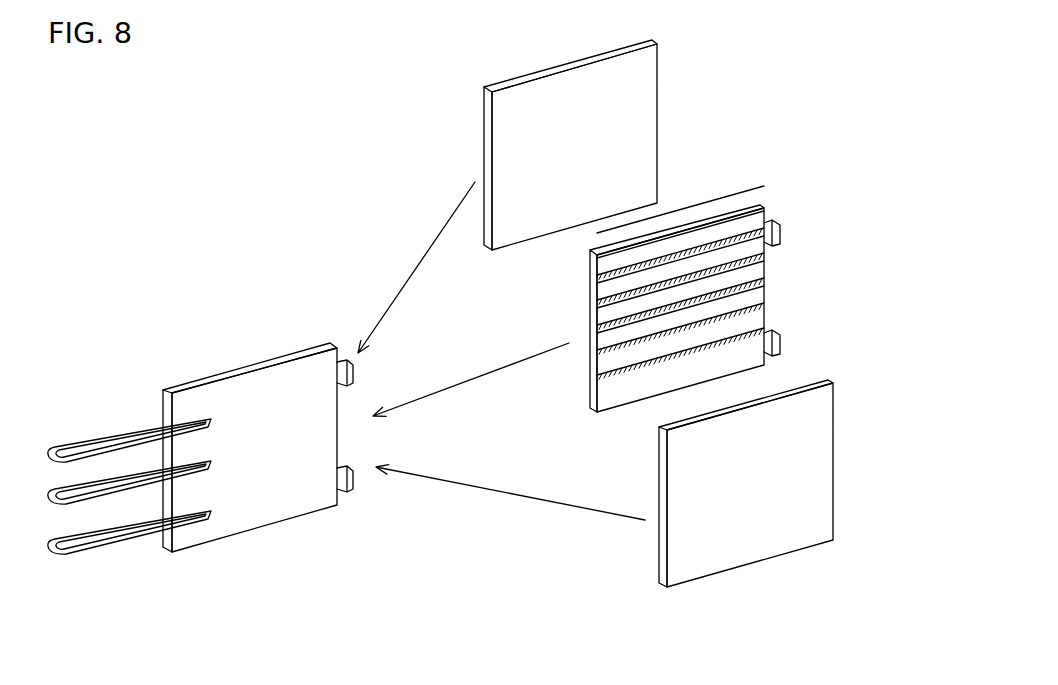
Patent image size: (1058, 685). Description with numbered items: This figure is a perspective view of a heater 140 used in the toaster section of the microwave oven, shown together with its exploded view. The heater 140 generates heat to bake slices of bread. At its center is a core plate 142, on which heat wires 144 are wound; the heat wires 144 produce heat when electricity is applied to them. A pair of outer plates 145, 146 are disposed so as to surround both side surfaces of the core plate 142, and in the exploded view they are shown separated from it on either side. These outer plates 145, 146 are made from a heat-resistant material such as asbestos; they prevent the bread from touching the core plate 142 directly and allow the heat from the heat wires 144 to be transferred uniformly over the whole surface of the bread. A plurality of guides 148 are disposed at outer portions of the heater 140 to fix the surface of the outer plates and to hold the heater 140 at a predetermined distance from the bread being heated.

The heater 140 is at (230, 342).
The core plate 142 is at (734, 299).
The heat wires 144 is at (738, 273).
The outer plate 145 is at (639, 122).
The outer plate 146 is at (788, 478).
The guides 148 is at (108, 542).